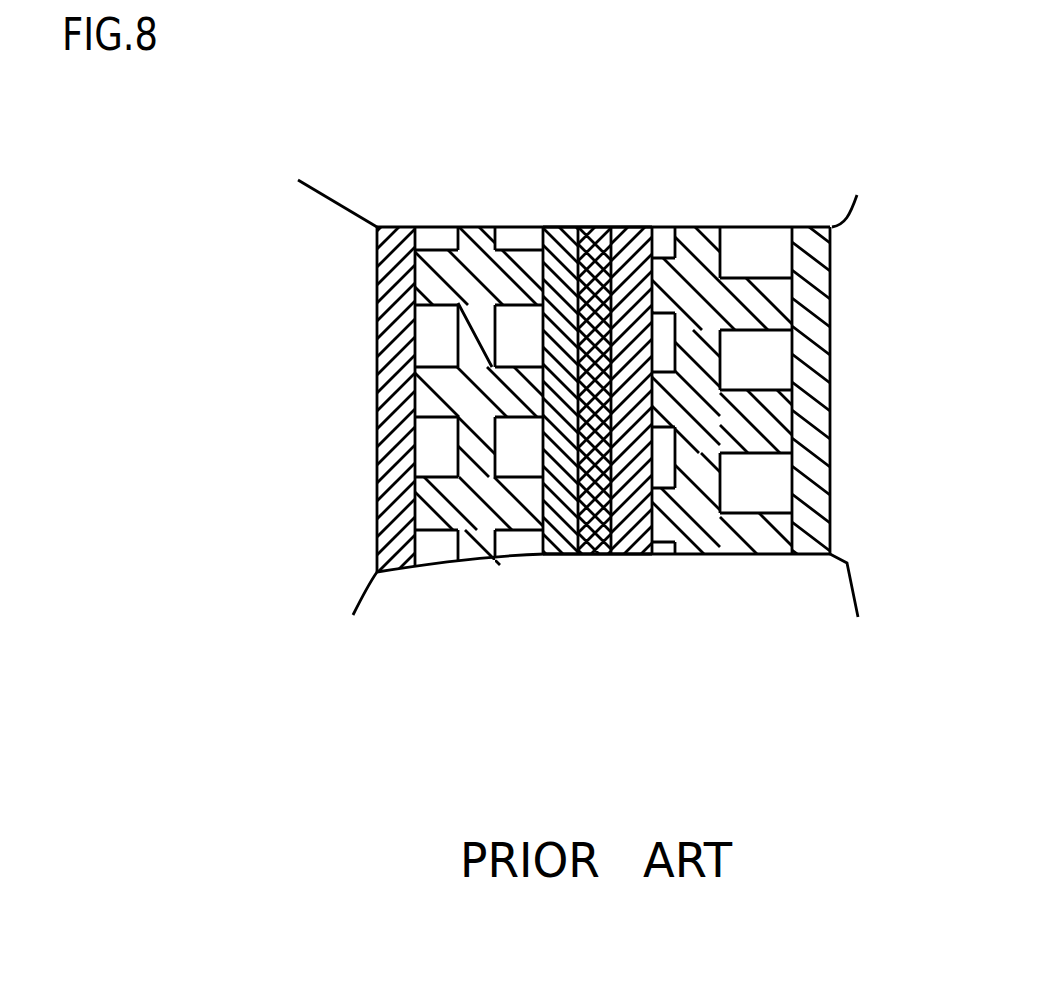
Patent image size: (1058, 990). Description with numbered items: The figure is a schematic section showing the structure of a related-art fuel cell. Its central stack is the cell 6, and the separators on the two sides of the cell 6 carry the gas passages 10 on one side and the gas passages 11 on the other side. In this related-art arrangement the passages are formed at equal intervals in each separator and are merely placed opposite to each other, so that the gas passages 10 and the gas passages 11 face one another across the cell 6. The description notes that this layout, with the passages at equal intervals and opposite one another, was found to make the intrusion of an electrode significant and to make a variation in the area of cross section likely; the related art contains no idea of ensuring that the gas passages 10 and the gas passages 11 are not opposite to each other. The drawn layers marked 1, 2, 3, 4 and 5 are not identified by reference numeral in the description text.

The anode (fuel electrode) 1 is at (485, 227).
The cathode (air electrode) 2 is at (720, 238).
The anode catalyst layer 3 is at (558, 555).
The cathode catalyst layer 4 is at (632, 555).
The polymer electrolyte membrane 5 is at (595, 555).
The cell 6 is at (533, 687).
The gas passages 10 is at (517, 343).
The gas passages 11 is at (662, 350).